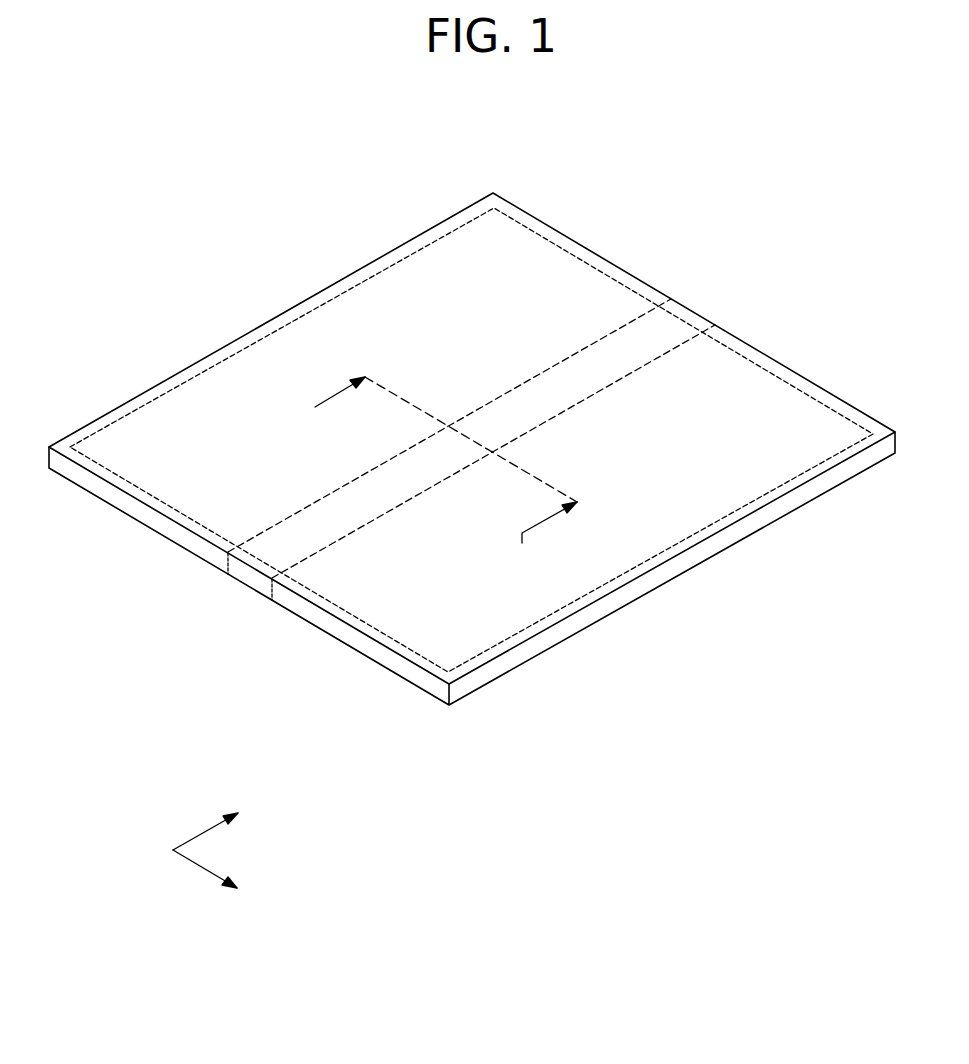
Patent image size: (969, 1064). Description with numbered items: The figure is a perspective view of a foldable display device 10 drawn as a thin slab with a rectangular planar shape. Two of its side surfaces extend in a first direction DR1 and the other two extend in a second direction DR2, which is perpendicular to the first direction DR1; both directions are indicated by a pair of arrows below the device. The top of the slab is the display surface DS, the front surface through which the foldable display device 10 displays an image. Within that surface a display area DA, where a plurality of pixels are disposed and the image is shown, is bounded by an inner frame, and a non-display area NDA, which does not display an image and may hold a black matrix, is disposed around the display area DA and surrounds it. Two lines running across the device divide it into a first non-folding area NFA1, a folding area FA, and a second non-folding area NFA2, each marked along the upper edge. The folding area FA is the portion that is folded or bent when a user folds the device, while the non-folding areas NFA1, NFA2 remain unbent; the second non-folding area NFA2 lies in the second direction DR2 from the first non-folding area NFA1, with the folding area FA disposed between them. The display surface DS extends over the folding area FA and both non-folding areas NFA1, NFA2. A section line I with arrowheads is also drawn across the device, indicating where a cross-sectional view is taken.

The foldable display device 10 is at (472, 431).
The display surface DS is at (472, 438).
The display area DA is at (148, 467).
The non-display area NDA is at (190, 525).
The folding area FA is at (718, 321).
The first non-folding area NFA1 is at (681, 299).
The second non-folding area NFA2 is at (901, 430).
The section line I-I' I is at (435, 469).
The first direction DR1 is at (225, 822).
The second direction DR2 is at (225, 881).